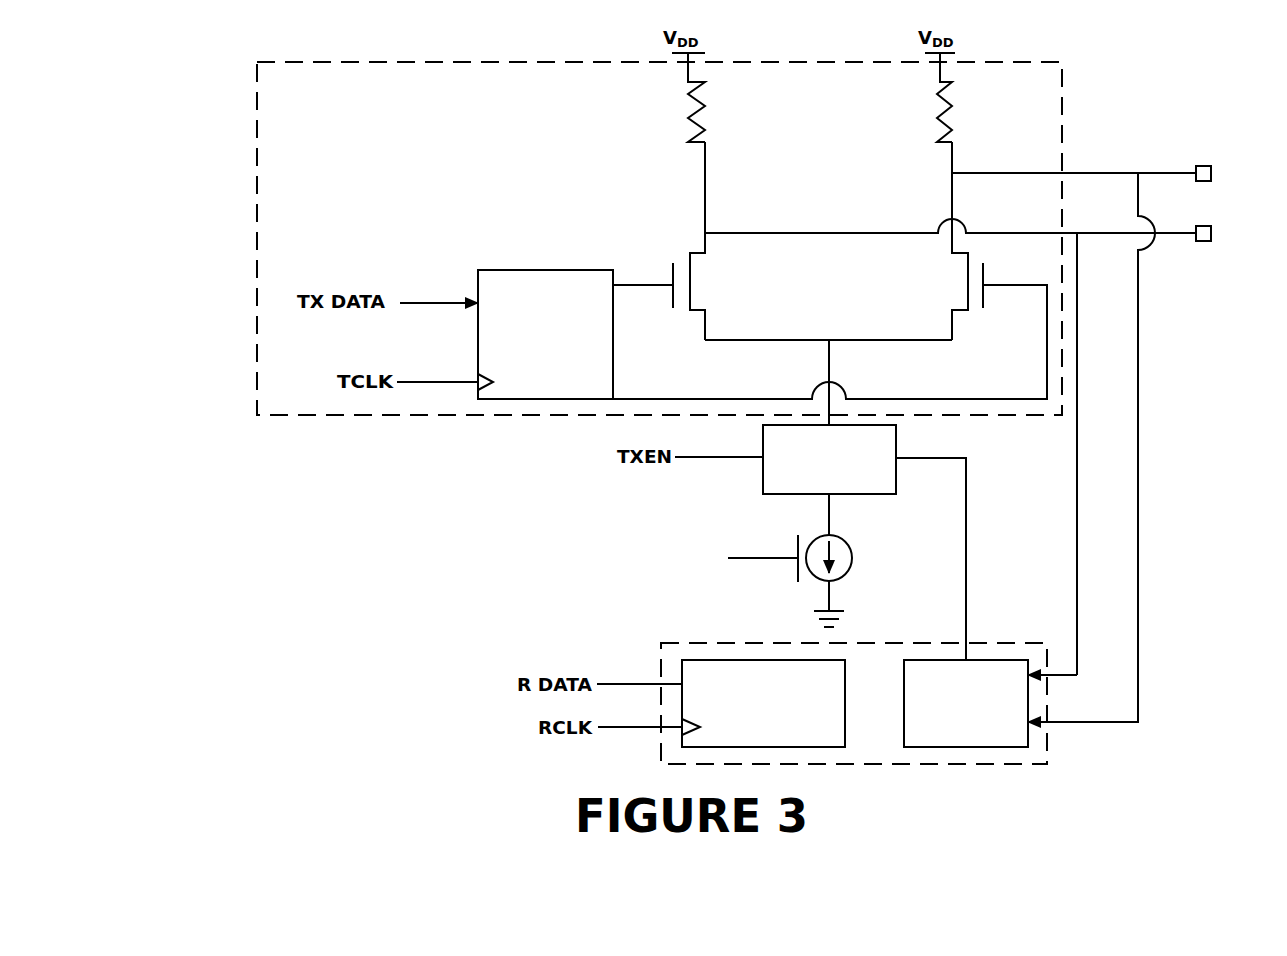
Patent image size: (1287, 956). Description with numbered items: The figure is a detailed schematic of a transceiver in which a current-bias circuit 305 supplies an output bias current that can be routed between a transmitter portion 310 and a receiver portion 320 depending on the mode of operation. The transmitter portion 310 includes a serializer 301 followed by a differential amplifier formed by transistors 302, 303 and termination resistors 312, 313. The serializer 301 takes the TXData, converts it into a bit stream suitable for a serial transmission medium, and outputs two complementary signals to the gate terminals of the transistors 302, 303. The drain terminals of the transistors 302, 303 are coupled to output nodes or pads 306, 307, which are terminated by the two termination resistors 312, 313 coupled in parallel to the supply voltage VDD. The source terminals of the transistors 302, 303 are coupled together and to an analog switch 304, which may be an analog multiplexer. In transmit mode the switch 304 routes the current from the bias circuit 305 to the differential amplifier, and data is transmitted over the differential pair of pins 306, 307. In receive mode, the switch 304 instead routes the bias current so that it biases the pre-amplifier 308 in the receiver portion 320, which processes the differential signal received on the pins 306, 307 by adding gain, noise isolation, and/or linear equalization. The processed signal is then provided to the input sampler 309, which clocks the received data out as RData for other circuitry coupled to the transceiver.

The serializer 301 is at (563, 357).
The transistor 302 is at (680, 251).
The transistor 303 is at (979, 251).
The analog switch 304 is at (846, 481).
The current-bias circuit 305 is at (855, 559).
The output node or pad 306 is at (1214, 172).
The output node or pad 307 is at (1214, 234).
The pre-amplifier 308 is at (982, 726).
The input sampler 309 is at (779, 737).
The transmitter portion 310 is at (307, 93).
The termination resistor 312 is at (682, 117).
The termination resistor 313 is at (932, 117).
The receiver portion 320 is at (896, 758).